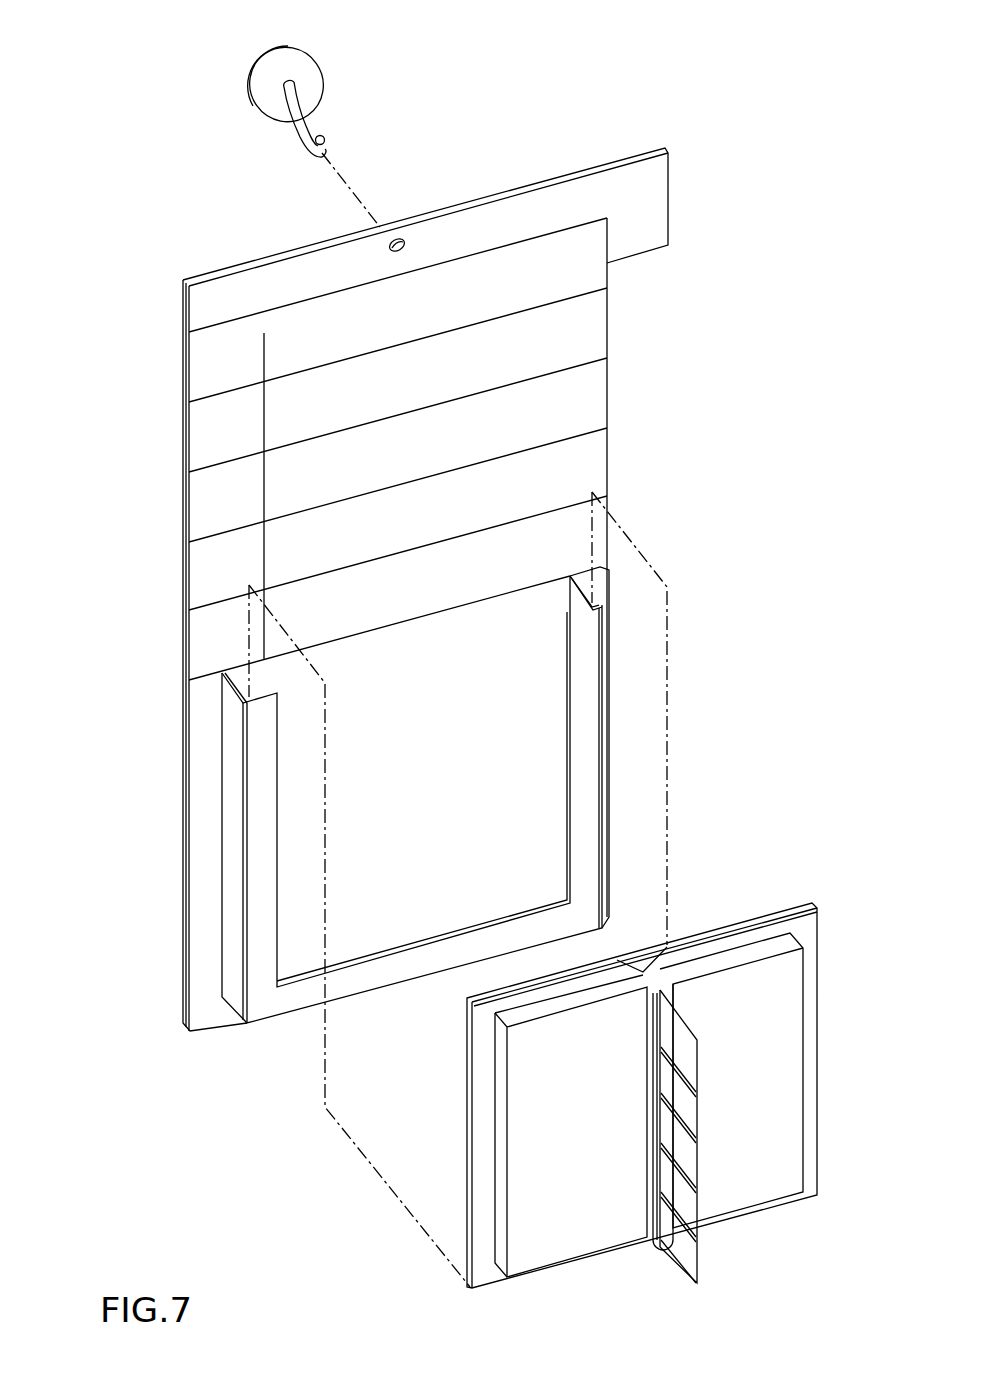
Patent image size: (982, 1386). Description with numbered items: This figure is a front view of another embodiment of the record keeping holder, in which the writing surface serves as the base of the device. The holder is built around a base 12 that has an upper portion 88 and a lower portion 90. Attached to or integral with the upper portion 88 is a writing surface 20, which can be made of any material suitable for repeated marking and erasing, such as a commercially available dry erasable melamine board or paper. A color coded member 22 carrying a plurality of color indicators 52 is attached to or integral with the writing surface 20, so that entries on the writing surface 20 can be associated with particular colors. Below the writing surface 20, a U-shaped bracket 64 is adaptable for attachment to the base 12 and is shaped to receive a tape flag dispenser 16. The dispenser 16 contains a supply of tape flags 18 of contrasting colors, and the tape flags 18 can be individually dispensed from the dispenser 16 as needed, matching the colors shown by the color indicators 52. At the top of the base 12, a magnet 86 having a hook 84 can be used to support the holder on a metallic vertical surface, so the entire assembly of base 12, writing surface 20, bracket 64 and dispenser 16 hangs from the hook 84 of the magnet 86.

The base 12 is at (352, 678).
The writing surface 20 is at (409, 449).
The color coded member 22 is at (184, 580).
The color indicators 52 is at (222, 360).
The U-shaped bracket 64 is at (590, 755).
The hook 84 is at (310, 127).
The magnet 86 is at (303, 68).
The upper portion 88 is at (607, 443).
The lower portion 90 is at (184, 875).
The tape flag dispenser 16 is at (507, 1187).
The tape flags 18 is at (697, 1260).